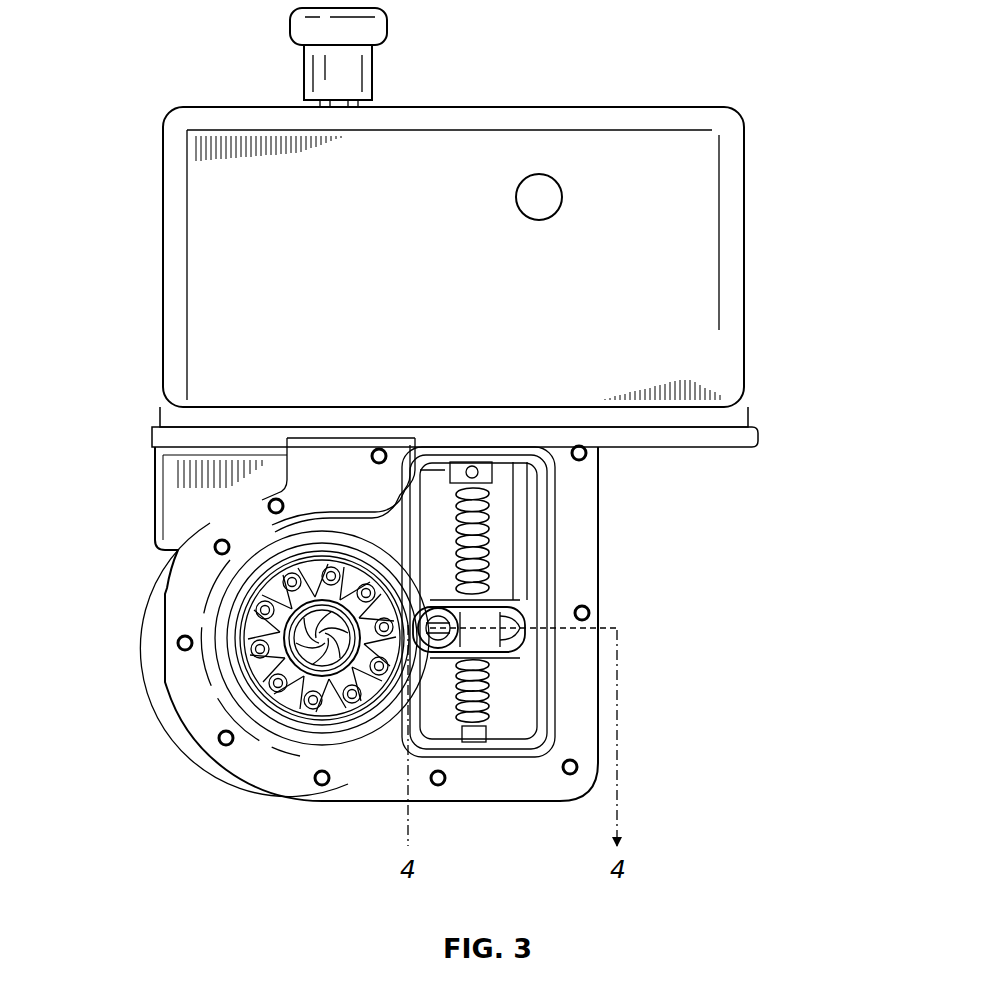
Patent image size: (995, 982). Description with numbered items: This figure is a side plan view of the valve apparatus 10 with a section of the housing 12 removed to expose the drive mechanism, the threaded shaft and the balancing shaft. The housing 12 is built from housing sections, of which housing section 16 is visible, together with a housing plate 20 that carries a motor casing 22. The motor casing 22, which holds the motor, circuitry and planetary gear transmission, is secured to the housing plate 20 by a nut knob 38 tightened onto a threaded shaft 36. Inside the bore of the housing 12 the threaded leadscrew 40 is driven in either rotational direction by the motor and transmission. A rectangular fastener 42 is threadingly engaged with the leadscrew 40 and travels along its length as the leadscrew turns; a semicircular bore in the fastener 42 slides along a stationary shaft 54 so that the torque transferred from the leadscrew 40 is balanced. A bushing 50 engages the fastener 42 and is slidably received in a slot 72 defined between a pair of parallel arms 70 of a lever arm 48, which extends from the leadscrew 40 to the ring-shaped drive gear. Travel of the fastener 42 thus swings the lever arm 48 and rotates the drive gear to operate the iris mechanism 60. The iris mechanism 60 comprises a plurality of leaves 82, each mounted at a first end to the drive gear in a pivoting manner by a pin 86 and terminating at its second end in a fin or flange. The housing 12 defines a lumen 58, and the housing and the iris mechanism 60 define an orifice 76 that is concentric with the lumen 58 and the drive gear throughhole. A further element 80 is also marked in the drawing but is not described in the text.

The valve apparatus 10 is at (820, 126).
The housing 12 is at (602, 491).
The housing section 16 is at (600, 700).
The housing plate 20 is at (755, 450).
The motor casing 22 is at (745, 275).
The threaded shaft 36 is at (358, 103).
The nut knob 38 is at (370, 8).
The threaded leadscrew 40 is at (490, 525).
The fastener 42 is at (522, 668).
The lever arm 48 is at (436, 650).
The bushing 50 is at (458, 690).
The stationary shaft 54 is at (527, 716).
The lumen 58 is at (292, 622).
The iris mechanism 60 is at (274, 720).
The parallel arms 70 is at (512, 585).
The slot 72 is at (518, 638).
The orifice 76 is at (303, 690).
The rotor hub 80 is at (360, 676).
The leaves 82 is at (265, 640).
The pin 86 is at (332, 572).